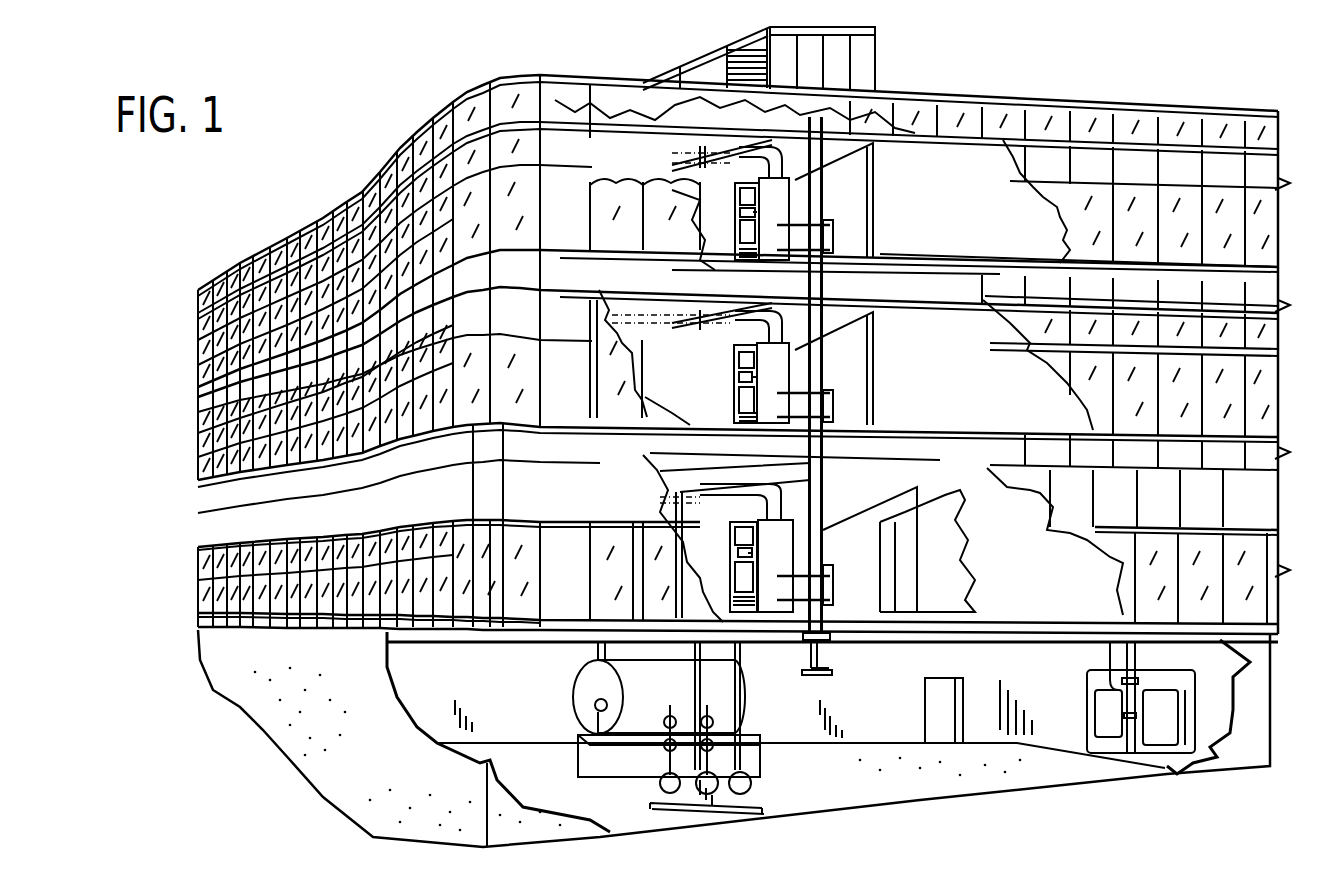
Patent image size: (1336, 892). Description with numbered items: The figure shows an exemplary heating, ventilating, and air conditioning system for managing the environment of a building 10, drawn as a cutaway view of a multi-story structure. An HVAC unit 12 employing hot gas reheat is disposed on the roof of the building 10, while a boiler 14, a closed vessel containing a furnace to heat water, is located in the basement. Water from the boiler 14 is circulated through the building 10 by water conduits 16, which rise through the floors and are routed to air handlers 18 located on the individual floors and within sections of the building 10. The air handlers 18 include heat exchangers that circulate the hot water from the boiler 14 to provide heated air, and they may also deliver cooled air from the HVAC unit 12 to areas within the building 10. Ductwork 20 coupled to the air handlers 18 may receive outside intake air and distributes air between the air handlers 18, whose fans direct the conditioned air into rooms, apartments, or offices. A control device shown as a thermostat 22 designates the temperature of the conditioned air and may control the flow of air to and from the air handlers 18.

The building 10 is at (1137, 106).
The HVAC unit 12 is at (733, 43).
The boiler 14 is at (585, 690).
The water conduits 16 is at (825, 590).
The air handlers 18 is at (801, 195).
The ductwork 20 is at (682, 157).
The thermostat 22 is at (757, 211).